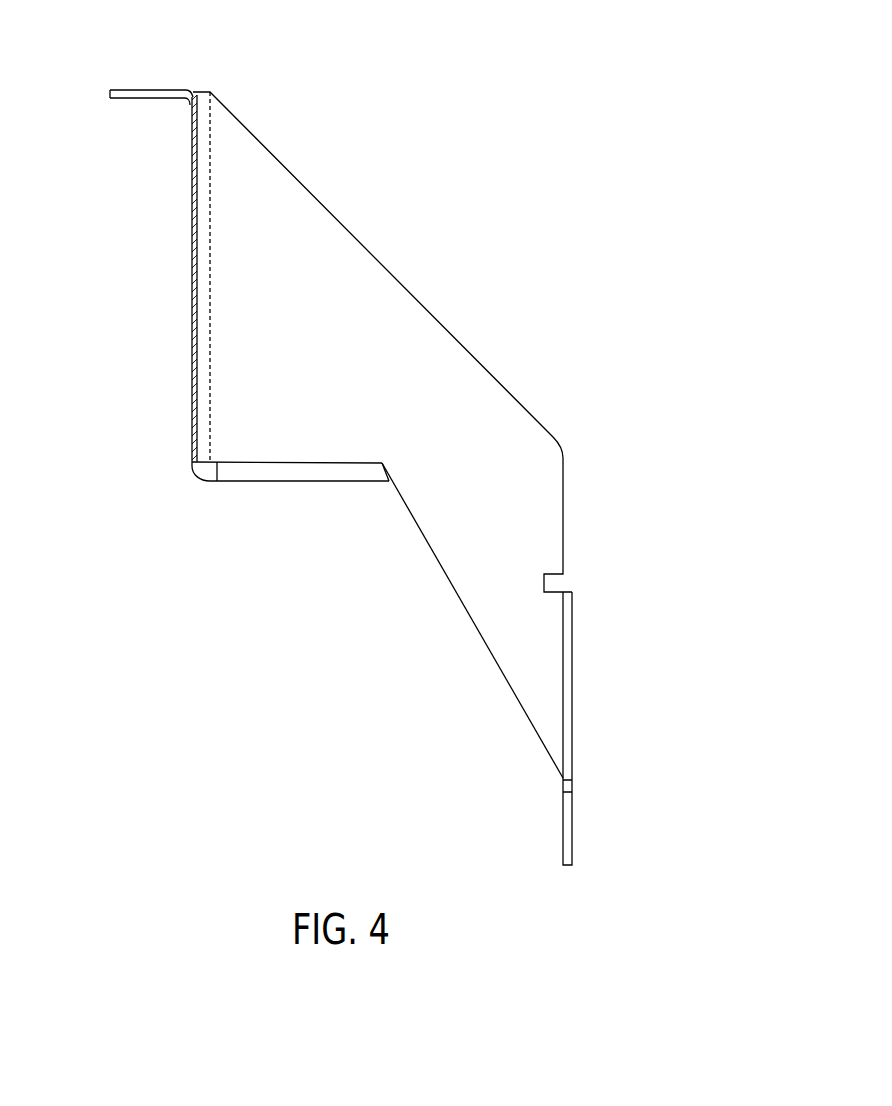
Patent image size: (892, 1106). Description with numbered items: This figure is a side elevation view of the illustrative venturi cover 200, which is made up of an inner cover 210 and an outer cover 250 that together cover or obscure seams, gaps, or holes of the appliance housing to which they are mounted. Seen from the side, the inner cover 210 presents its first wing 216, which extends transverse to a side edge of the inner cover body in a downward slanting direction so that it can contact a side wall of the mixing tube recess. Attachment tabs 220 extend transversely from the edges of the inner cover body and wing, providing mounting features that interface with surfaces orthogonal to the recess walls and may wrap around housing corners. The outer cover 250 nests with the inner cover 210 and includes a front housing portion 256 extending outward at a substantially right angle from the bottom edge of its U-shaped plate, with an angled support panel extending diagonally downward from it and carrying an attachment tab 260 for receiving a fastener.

The venturi cover 200 is at (503, 108).
The inner cover 210 is at (452, 592).
The first wing 216 is at (432, 333).
The attachment tab 220 is at (155, 86).
The outer cover 250 is at (307, 482).
The front housing portion 256 is at (253, 472).
The attachment tab 260 is at (570, 831).